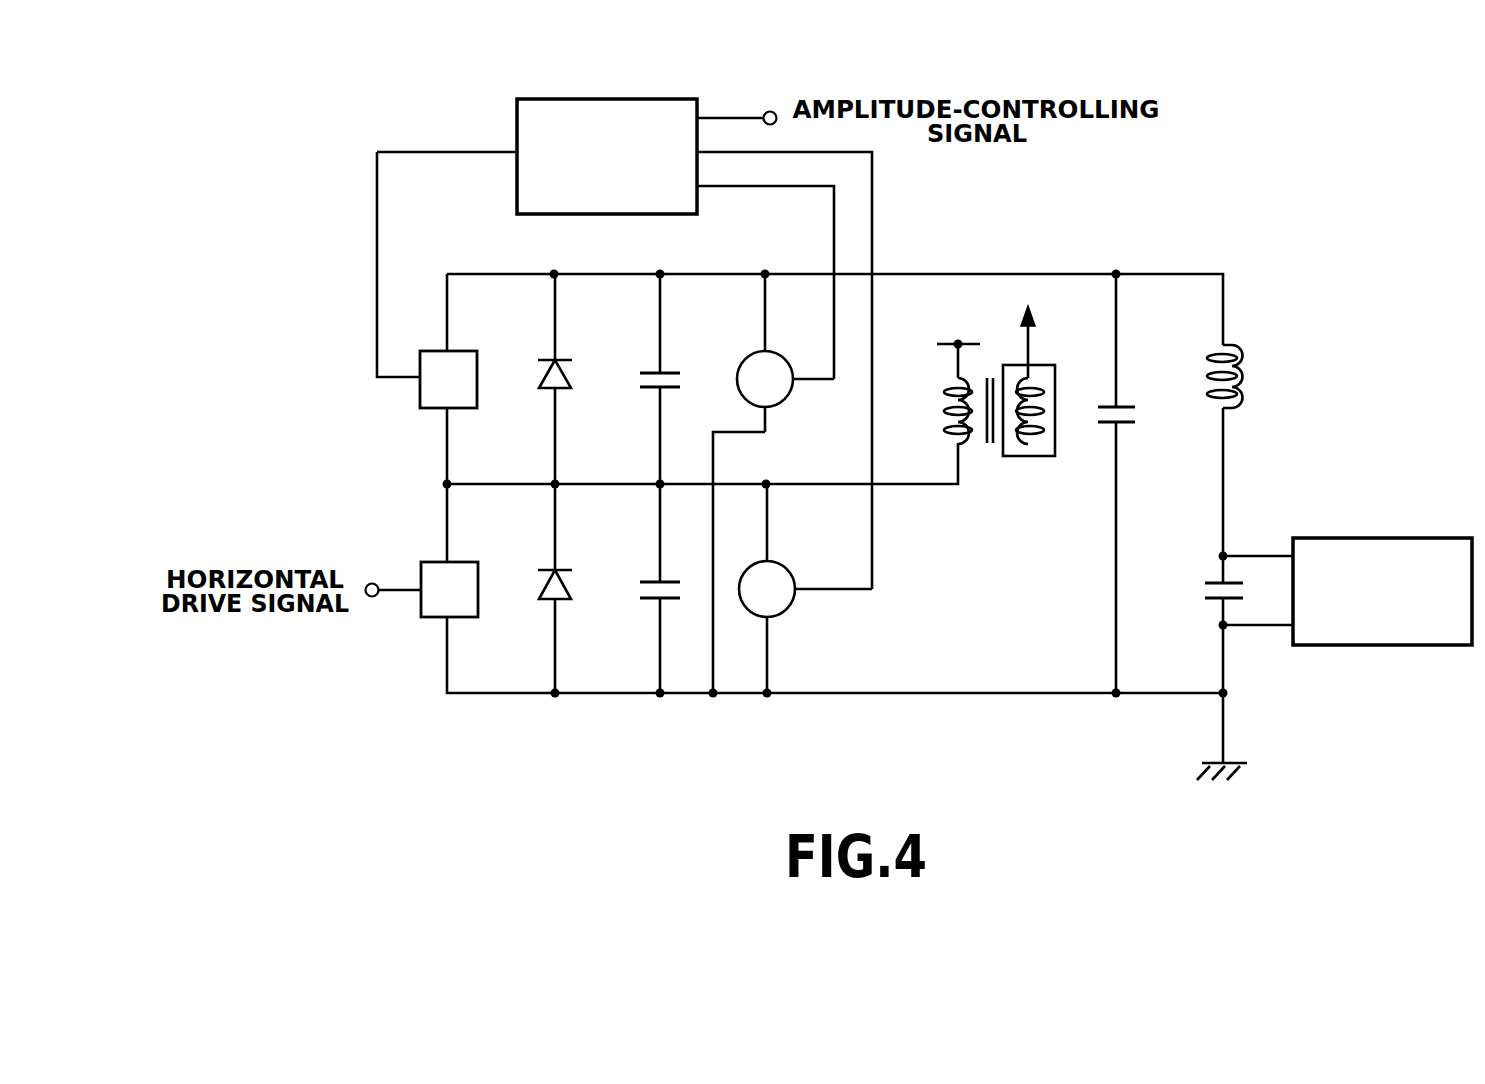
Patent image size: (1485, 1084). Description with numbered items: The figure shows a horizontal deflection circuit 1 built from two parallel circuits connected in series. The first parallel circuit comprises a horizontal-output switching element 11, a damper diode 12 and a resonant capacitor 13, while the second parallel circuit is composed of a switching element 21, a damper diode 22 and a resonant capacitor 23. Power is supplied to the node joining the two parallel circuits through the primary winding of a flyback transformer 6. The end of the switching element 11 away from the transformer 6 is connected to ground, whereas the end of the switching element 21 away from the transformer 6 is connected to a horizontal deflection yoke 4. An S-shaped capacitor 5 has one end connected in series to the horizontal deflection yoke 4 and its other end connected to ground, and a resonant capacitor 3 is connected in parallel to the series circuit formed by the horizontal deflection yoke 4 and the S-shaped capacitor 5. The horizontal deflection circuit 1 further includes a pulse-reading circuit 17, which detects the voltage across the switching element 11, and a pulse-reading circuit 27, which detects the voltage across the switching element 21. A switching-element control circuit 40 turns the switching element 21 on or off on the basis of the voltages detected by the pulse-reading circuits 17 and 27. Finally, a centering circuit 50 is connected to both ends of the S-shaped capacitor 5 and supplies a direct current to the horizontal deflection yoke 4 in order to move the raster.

The horizontal deflection circuit 1 is at (870, 765).
The resonant capacitor 3 is at (1142, 412).
The horizontal deflection yoke 4 is at (1245, 372).
The S-shaped capacitor 5 is at (1198, 588).
The flyback transformer 6 is at (943, 413).
The horizontal-output switching element 11 is at (430, 562).
The damper diode 12 is at (562, 570).
The resonant capacitor 13 is at (655, 600).
The pulse-reading circuit 17 is at (788, 608).
The switching element 21 is at (420, 392).
The damper diode 22 is at (560, 360).
The resonant capacitor 23 is at (672, 368).
The pulse-reading circuit 27 is at (782, 358).
The switching-element control circuit 40 is at (617, 99).
The centering circuit 50 is at (1368, 538).